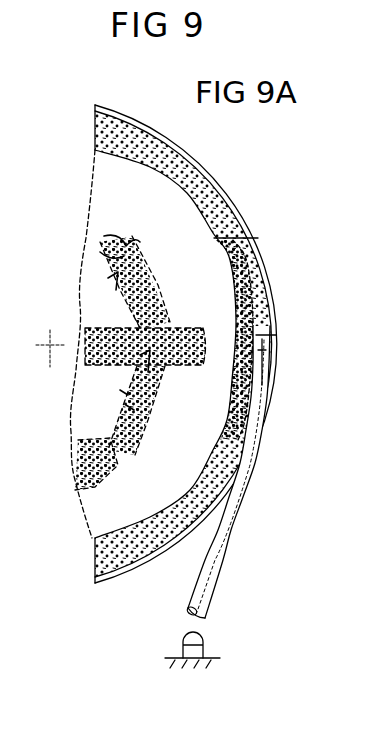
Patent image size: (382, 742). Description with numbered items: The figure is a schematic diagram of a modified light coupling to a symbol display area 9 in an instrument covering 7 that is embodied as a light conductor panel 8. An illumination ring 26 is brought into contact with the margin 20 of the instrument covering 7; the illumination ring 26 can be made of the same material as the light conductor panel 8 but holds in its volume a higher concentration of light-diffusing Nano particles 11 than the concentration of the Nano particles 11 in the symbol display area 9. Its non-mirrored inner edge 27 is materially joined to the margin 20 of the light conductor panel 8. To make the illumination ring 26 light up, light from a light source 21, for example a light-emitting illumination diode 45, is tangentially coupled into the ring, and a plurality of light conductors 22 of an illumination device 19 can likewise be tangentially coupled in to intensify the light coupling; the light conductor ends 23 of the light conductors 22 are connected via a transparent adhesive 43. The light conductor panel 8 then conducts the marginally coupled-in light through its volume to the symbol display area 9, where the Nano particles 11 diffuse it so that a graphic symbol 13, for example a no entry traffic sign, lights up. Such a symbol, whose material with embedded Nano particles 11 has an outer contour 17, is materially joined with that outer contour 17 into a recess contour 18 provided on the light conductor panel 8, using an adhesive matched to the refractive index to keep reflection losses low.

The instrument covering 7 is at (222, 326).
The light conductor panel 8 is at (185, 230).
The symbol display area 9 is at (140, 432).
The light-diffusing Nano particles 11 is at (104, 254).
The graphic symbol 13 is at (103, 442).
The outer contour 17 is at (198, 390).
The recess contour 18 is at (136, 312).
The illumination device 19 is at (263, 529).
The margin 20 is at (216, 292).
The light source 21 is at (218, 649).
The light conductors 22 is at (250, 459).
The light conductor ends 23 is at (267, 352).
The illumination ring 26 is at (184, 158).
The non-mirrored inner edge 27 is at (216, 232).
The transparent adhesive 43 is at (274, 338).
The light-emitting illumination diode 45 is at (183, 656).